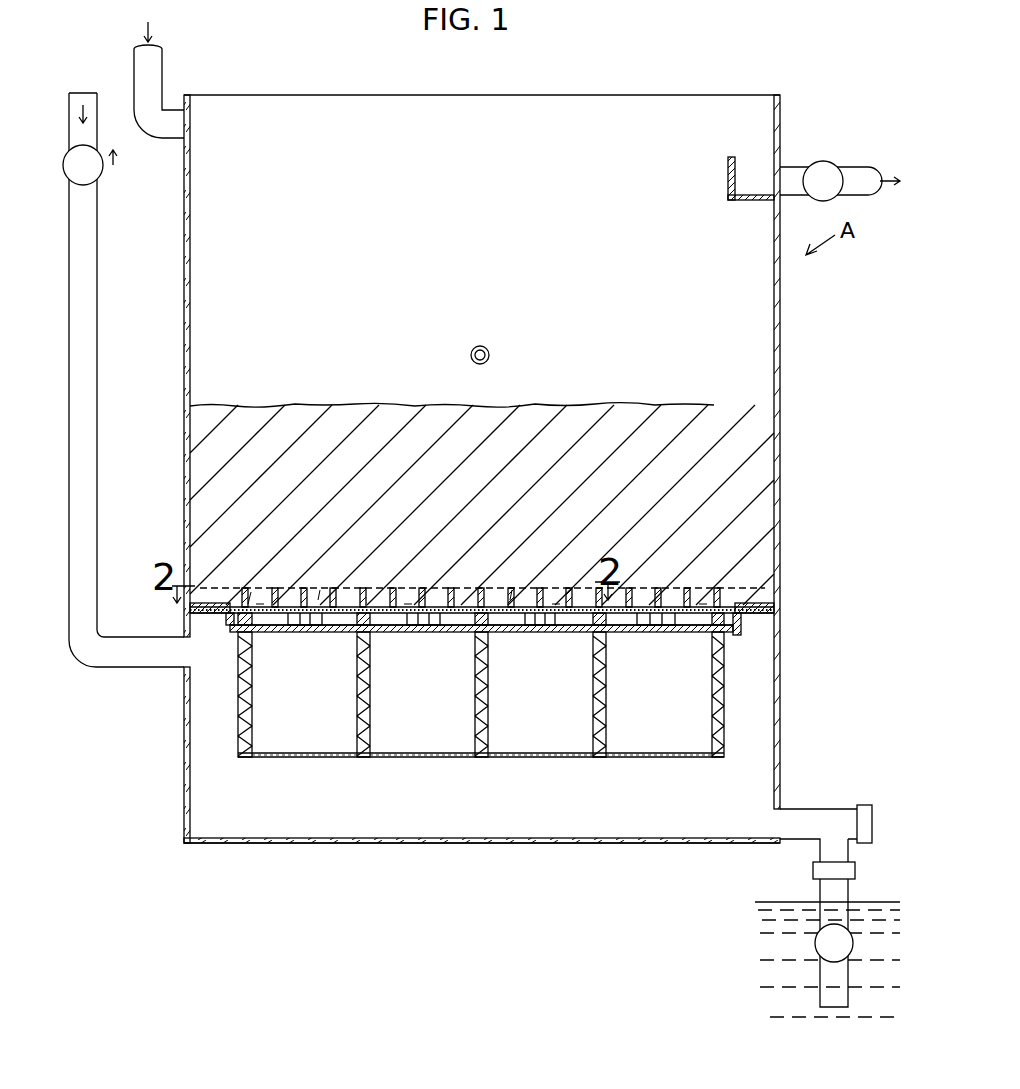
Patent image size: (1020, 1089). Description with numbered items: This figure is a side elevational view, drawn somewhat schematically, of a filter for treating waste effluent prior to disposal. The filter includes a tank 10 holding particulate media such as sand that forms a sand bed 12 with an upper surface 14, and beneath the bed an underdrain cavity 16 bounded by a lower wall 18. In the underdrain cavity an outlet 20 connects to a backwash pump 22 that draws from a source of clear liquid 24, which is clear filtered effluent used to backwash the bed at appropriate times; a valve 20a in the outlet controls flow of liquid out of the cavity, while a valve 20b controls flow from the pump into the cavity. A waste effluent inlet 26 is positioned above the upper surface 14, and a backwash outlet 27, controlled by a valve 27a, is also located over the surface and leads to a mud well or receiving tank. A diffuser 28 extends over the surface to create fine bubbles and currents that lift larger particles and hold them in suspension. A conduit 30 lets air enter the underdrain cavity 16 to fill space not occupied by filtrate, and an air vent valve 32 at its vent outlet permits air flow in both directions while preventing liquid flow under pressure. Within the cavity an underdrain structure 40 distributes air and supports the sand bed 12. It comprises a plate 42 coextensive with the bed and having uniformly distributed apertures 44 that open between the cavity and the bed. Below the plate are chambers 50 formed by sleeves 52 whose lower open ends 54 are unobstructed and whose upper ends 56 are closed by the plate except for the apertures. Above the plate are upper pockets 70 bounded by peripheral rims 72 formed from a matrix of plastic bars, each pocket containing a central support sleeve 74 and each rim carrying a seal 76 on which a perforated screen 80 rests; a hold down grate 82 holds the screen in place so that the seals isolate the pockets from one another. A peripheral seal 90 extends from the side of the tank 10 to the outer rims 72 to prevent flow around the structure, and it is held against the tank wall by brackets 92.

The tank 10 is at (780, 300).
The sand bed 12 is at (760, 481).
The upper surface 14 is at (670, 406).
The underdrain cavity 16 is at (548, 828).
The lower wall 18 is at (635, 838).
The outlet 20 is at (818, 820).
The valve 20a is at (868, 805).
The valve 20b is at (855, 868).
The backwash pump 22 is at (815, 947).
The source of clear liquid 24 is at (877, 902).
The waste effluent inlet 26 is at (164, 70).
The backwash outlet 27 is at (860, 170).
The valve 27a is at (823, 161).
The diffuser 28 is at (490, 357).
The conduit 30 is at (97, 318).
The air vent valve 32 is at (66, 172).
The underdrain structure 40 is at (542, 574).
The plate 42 is at (548, 634).
The apertures 44 is at (275, 634).
The chambers 50 is at (312, 757).
The sleeves 52 is at (238, 712).
The lower open ends 54 is at (270, 757).
The upper ends 56 is at (252, 634).
The upper pockets 70 is at (363, 596).
The peripheral rims 72 is at (235, 592).
The central support sleeve 74 is at (285, 601).
The seal 76 is at (251, 592).
The screen 80 is at (320, 590).
The hold down grate 82 is at (512, 590).
The peripheral seal 90 is at (220, 622).
The brackets 92 is at (190, 609).